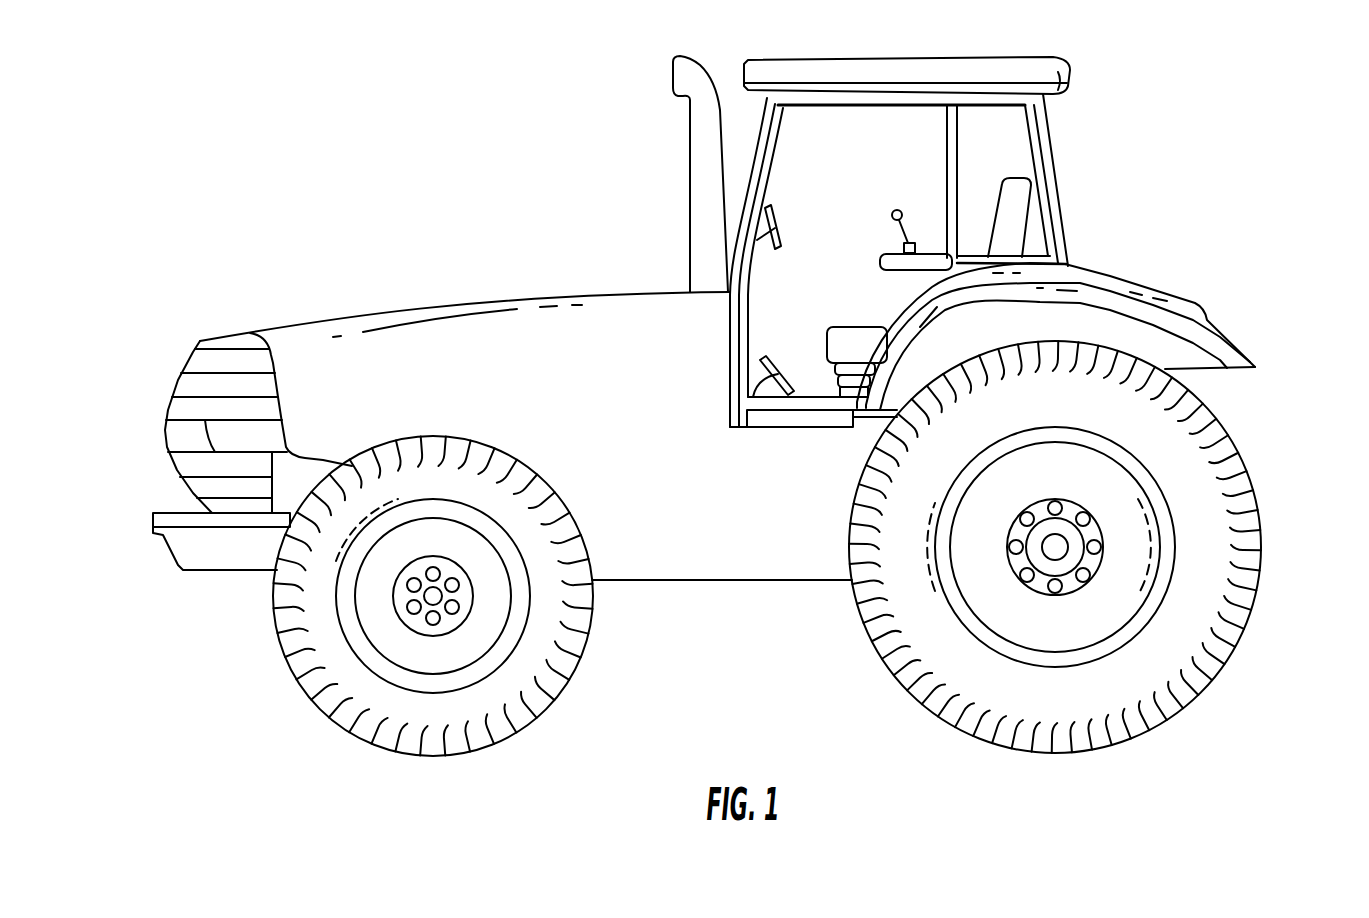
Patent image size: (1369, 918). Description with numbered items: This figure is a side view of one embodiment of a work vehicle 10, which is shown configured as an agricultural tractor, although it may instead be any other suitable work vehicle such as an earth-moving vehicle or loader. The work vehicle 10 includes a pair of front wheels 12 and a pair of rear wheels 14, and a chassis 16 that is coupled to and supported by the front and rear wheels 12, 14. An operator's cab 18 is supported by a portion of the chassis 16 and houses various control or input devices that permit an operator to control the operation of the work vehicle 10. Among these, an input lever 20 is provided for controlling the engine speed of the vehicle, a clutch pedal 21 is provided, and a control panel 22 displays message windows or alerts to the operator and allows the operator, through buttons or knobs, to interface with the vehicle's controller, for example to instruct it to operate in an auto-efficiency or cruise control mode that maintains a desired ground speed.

The work vehicle 10 is at (332, 183).
The front wheels 12 is at (272, 613).
The rear wheels 14 is at (1262, 577).
The chassis 16 is at (662, 580).
The operator's cab 18 is at (1062, 187).
The input lever 20 is at (890, 215).
The clutch pedal 21 is at (780, 380).
The control panel 22 is at (780, 212).